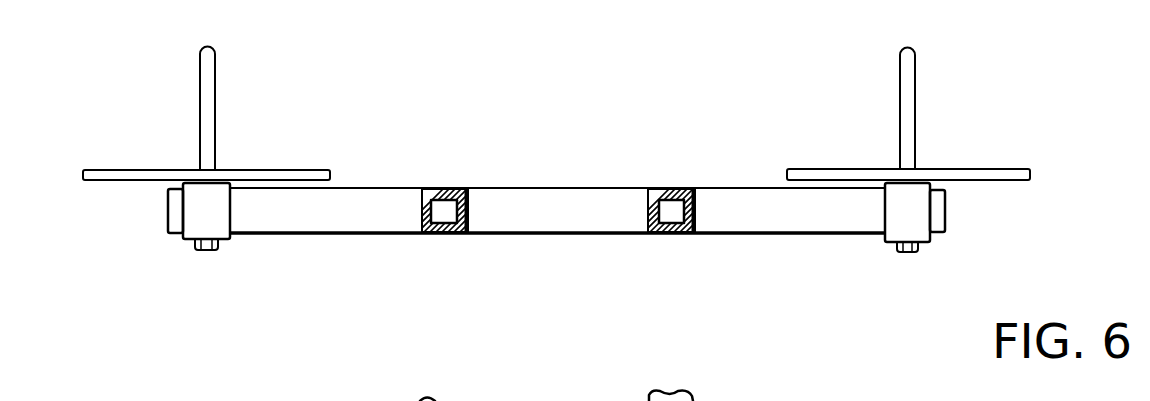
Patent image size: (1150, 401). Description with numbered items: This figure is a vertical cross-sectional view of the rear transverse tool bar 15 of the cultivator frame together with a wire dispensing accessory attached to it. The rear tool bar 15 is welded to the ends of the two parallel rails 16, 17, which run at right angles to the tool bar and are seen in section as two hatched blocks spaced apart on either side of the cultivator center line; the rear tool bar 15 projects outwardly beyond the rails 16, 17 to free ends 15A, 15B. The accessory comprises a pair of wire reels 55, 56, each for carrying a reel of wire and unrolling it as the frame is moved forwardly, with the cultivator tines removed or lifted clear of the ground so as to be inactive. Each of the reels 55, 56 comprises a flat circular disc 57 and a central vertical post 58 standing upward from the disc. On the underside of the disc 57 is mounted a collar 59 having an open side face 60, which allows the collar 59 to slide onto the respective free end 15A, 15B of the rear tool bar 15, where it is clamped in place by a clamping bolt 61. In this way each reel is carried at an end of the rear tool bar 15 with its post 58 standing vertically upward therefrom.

The rear transverse tool bar 15 is at (487, 187).
The free end of rear tool bar 15A is at (947, 218).
The free end of rear tool bar 15B is at (165, 212).
The rail 16 is at (695, 215).
The rail 17 is at (470, 215).
The wire reel 55 is at (197, 176).
The wire reel 56 is at (927, 139).
The flat circular disc 57 is at (122, 169).
The central vertical post 58 is at (197, 93).
The collar 59 is at (203, 220).
The open side face 60 is at (237, 203).
The clamping bolt 61 is at (207, 252).